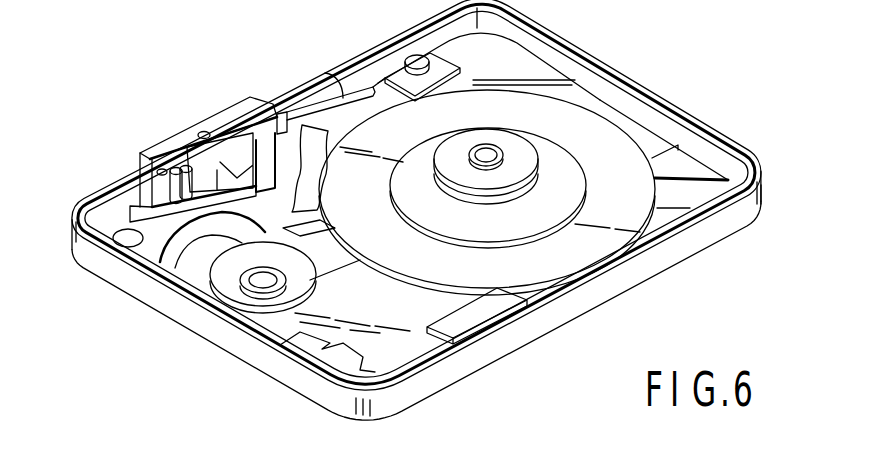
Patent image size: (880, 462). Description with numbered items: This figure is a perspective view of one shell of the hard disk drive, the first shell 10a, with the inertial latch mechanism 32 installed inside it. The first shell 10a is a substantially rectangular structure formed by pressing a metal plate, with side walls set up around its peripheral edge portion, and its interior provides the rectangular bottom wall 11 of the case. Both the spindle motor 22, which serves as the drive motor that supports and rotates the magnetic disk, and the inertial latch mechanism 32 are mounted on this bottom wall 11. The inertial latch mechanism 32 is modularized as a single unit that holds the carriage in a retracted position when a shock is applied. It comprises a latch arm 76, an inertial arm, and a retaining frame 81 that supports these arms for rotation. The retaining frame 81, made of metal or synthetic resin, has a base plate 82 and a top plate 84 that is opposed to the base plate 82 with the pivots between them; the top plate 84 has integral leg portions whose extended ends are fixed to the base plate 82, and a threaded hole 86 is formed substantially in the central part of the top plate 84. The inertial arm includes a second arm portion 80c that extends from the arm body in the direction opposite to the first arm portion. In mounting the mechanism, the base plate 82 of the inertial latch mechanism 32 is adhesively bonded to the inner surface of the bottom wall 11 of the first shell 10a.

The first shell 10a is at (714, 103).
The bottom wall 11 is at (400, 351).
The spindle motor 22 is at (553, 155).
The inertial latch mechanism 32 is at (215, 131).
The latch arm 76 is at (137, 202).
The second arm portion 80c is at (347, 95).
The retaining frame 81 is at (203, 106).
The base plate 82 is at (228, 190).
The top plate 84 is at (246, 107).
The threaded hole 86 is at (201, 132).